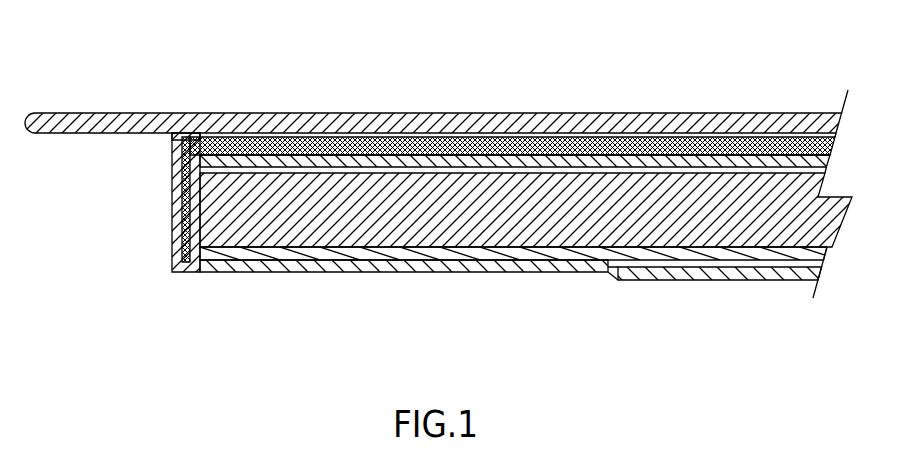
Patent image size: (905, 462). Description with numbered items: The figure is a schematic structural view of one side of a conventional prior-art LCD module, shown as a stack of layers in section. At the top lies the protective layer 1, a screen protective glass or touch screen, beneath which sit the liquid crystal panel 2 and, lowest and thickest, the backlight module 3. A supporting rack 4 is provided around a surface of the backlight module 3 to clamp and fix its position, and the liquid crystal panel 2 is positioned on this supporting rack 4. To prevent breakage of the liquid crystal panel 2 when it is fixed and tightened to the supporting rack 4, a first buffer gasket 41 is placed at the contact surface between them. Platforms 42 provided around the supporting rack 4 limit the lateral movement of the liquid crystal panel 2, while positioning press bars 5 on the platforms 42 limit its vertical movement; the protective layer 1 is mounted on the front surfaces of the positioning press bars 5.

The protective layer 1 is at (590, 117).
The liquid crystal panel 2 is at (382, 155).
The backlight module 3 is at (562, 230).
The supporting rack 4 is at (172, 210).
The first buffer gasket 41 is at (282, 157).
The platform 42 is at (172, 153).
The positioning press bar 5 is at (185, 138).